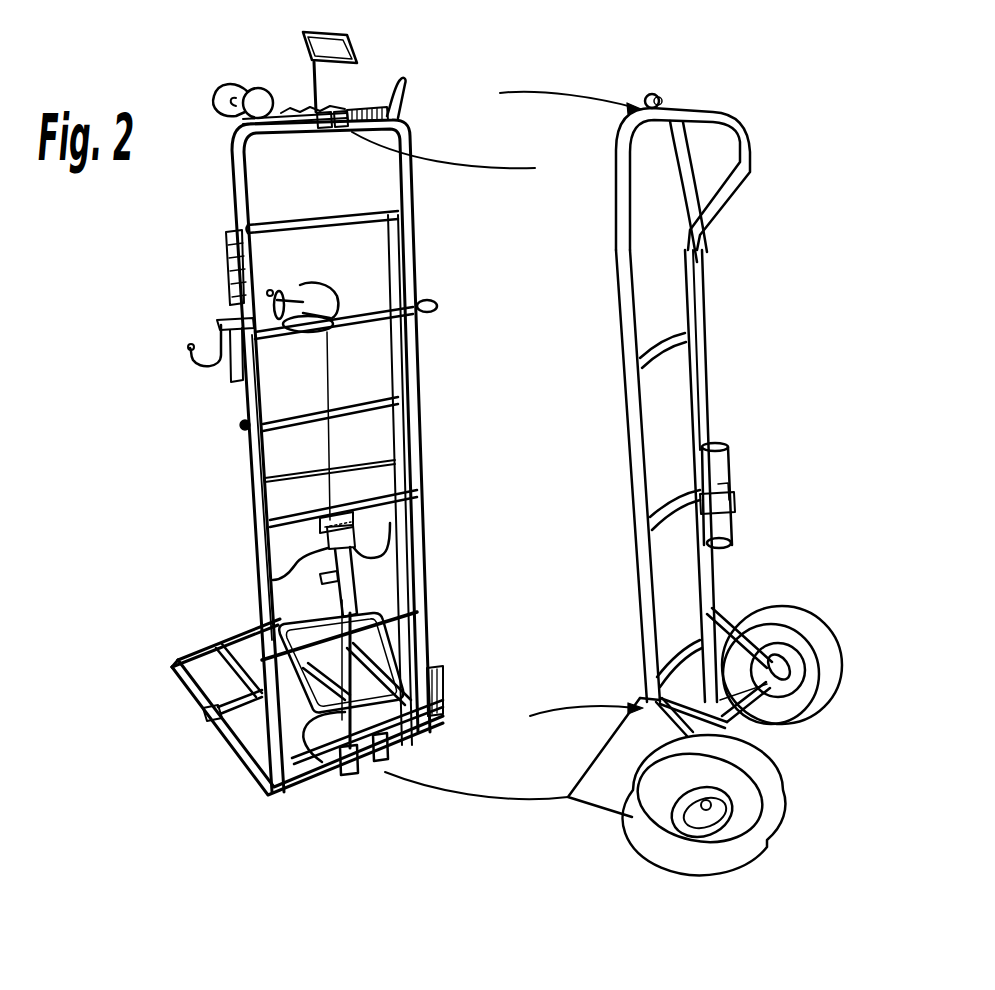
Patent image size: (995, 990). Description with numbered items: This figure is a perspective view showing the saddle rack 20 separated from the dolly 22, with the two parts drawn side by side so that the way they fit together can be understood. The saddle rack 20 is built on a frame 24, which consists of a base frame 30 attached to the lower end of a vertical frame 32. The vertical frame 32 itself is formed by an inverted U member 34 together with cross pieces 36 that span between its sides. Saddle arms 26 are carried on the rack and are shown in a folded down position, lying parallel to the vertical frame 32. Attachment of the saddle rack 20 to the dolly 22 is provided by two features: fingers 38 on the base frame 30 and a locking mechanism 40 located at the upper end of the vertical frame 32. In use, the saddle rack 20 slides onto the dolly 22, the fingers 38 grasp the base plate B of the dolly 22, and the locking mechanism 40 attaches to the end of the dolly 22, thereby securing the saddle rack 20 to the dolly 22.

The saddle rack 20 is at (205, 183).
The dolly 22 is at (746, 126).
The frame 24 is at (228, 303).
The saddle arms 26 is at (395, 370).
The base frame 30 is at (210, 716).
The vertical frame 32 is at (412, 253).
The inverted U member 34 is at (260, 538).
The cross pieces 36 is at (420, 311).
The fingers 38 is at (350, 760).
The locking mechanism 40 is at (410, 112).
The base plate B is at (615, 785).